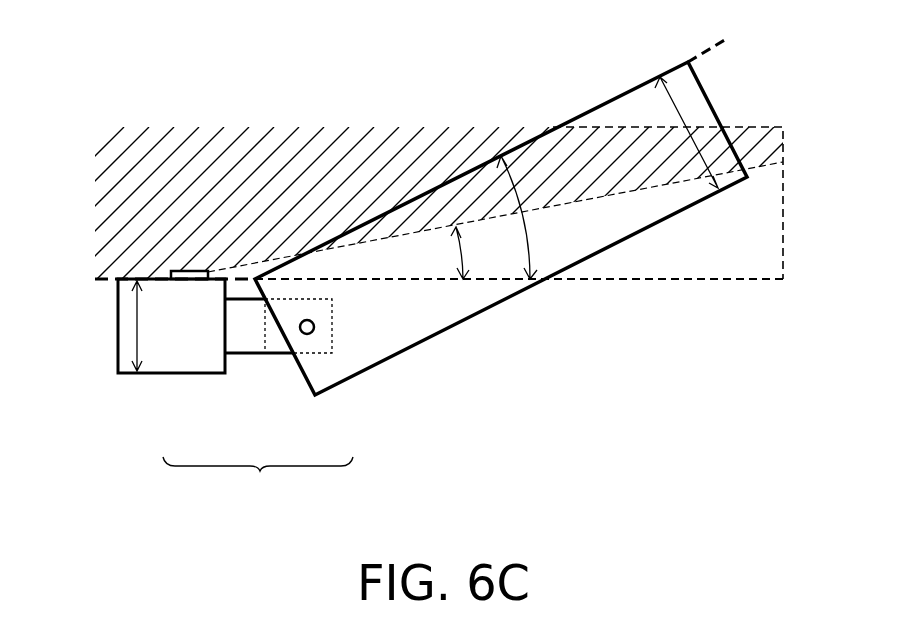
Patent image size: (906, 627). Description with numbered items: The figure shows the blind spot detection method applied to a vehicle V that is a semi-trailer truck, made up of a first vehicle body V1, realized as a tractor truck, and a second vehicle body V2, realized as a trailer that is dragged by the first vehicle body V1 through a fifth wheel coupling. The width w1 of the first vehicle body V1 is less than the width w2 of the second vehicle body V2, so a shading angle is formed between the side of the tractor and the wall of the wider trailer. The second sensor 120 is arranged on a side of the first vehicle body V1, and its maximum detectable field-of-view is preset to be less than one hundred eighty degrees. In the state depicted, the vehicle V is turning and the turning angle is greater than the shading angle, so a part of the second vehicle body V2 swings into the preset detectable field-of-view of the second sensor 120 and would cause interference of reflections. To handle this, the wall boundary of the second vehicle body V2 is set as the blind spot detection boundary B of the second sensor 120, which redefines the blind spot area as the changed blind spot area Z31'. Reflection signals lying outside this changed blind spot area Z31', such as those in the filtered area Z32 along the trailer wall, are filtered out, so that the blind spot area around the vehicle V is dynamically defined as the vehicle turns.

The second sensor 120 is at (183, 276).
The width of the first vehicle body w1 is at (137, 325).
The width of the second vehicle body w2 is at (678, 93).
The first vehicle body V1 is at (172, 374).
The second vehicle body V2 is at (328, 396).
The vehicle V is at (258, 479).
The changed blind spot area Z31' is at (399, 169).
The filtered area Z32 is at (610, 157).
The blind spot detection boundary B is at (719, 42).